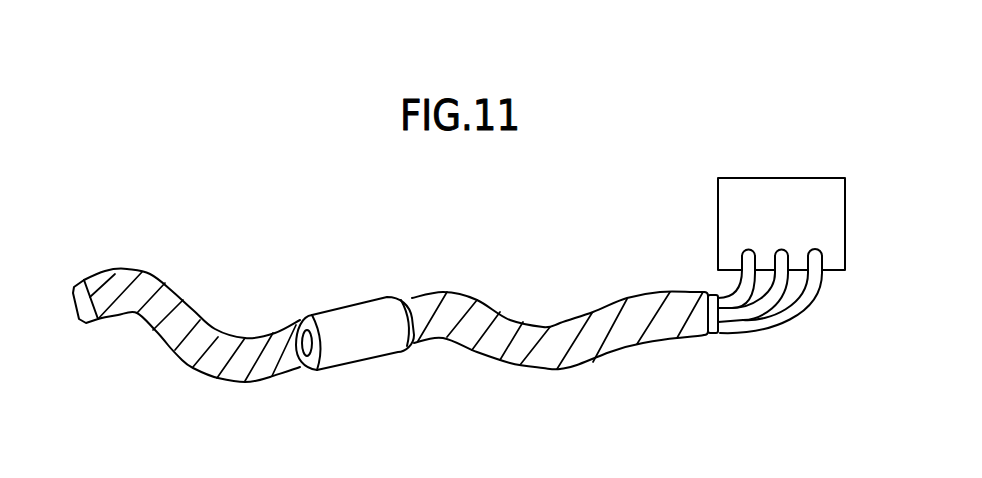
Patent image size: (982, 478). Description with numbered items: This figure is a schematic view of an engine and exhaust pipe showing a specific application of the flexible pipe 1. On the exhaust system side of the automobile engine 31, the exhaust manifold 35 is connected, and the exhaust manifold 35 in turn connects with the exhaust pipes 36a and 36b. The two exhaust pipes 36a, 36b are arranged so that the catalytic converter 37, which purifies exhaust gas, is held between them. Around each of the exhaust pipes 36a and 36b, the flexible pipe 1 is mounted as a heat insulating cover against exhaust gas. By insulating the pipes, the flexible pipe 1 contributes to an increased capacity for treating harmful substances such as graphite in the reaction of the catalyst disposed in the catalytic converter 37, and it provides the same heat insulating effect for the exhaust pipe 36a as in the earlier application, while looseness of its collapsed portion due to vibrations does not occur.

The flexible pipe 1 is at (207, 365).
The automobile engine 31 is at (752, 195).
The exhaust manifold 35 is at (788, 312).
The exhaust pipe 36a is at (717, 325).
The exhaust pipe 36b is at (306, 320).
The catalytic converter 37 is at (355, 320).